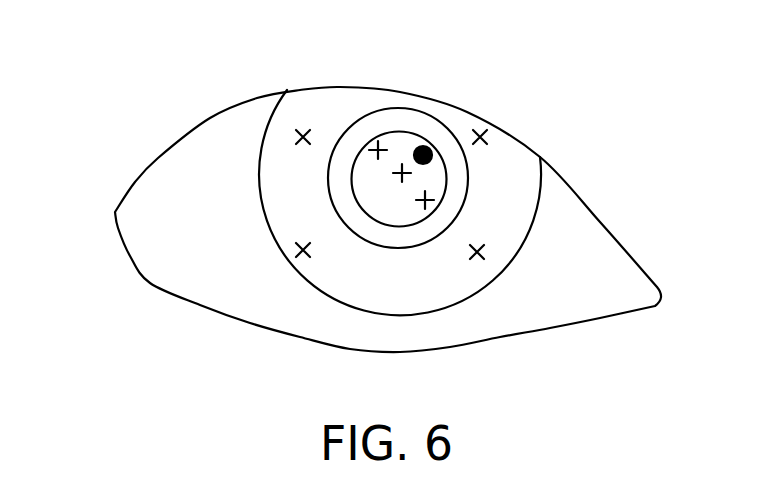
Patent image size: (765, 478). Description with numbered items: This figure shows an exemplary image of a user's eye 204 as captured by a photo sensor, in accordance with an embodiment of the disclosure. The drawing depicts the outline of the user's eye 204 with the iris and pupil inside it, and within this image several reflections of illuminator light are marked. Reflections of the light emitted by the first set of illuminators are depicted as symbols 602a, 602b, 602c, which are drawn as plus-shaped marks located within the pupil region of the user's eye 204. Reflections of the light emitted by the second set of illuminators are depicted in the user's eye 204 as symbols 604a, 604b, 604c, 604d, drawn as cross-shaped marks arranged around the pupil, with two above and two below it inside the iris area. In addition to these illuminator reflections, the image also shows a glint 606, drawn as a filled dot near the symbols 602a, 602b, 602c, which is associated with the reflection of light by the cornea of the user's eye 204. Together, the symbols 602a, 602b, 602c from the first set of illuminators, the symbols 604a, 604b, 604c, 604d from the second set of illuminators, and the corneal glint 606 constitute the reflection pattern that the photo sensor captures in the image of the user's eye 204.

The user's eye 204 is at (354, 219).
The symbol depicting reflection of light from first set of illuminators 602a is at (353, 104).
The symbol depicting reflection of light from first set of illuminators 602b is at (426, 123).
The symbol depicting reflection of light from first set of illuminators 602c is at (520, 180).
The symbol depicting reflection of light from second set of illuminators 604a is at (257, 110).
The symbol depicting reflection of light from second set of illuminators 604b is at (546, 127).
The symbol depicting reflection of light from second set of illuminators 604c is at (510, 310).
The symbol depicting reflection of light from second set of illuminators 604d is at (256, 305).
The glint 606 is at (464, 119).